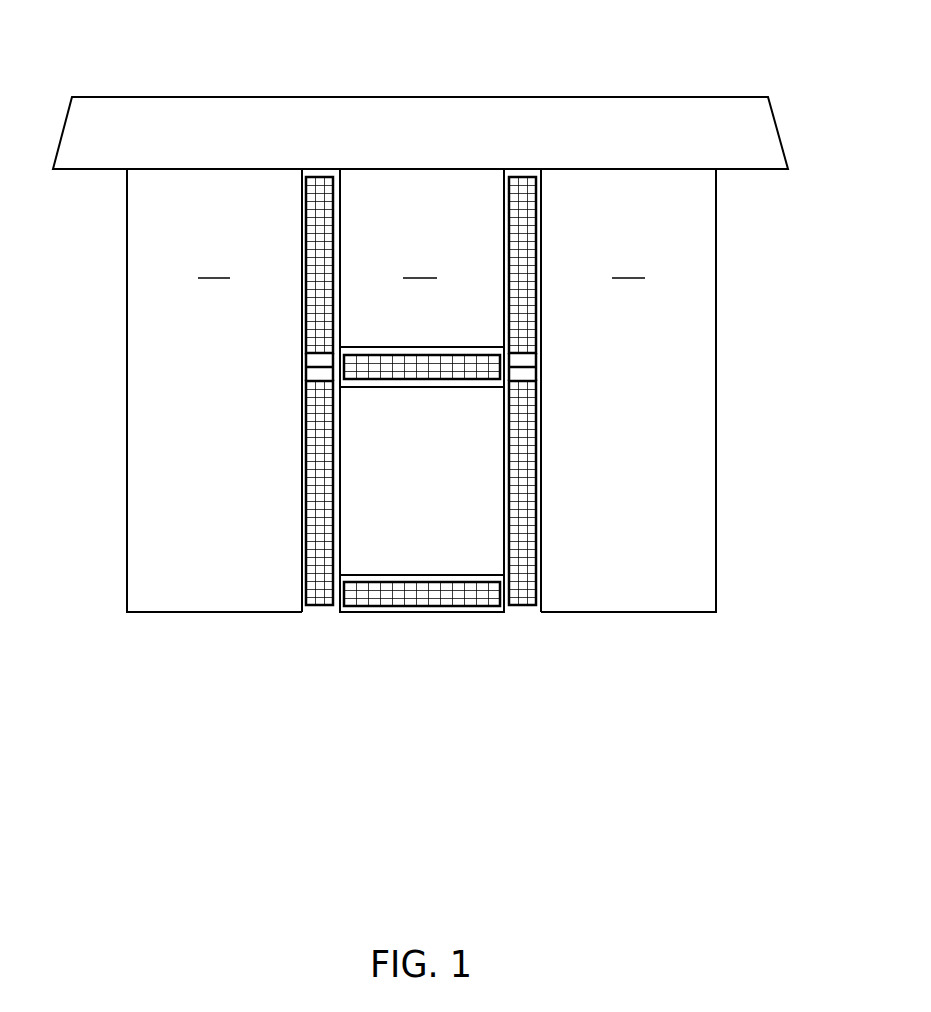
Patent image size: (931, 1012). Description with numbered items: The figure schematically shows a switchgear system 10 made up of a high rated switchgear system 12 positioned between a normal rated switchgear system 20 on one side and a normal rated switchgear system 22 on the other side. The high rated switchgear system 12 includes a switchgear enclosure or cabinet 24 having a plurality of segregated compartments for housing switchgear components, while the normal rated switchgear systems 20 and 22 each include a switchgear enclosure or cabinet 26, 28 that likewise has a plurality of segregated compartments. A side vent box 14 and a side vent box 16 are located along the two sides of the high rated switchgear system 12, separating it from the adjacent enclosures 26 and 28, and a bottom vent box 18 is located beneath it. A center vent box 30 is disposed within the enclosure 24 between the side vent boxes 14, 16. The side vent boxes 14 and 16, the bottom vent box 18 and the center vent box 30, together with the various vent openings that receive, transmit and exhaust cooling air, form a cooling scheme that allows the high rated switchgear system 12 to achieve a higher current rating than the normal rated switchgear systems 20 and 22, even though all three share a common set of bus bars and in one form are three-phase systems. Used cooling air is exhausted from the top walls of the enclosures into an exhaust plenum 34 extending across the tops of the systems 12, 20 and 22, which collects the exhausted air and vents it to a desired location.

The switchgear system 10 is at (749, 45).
The high rated switchgear system 12 is at (422, 373).
The side vent box 14 is at (323, 613).
The side vent box 16 is at (533, 613).
The bottom vent box 18 is at (428, 613).
The normal rated switchgear system 20 is at (214, 373).
The normal rated switchgear system 22 is at (628, 373).
The switchgear enclosure or cabinet 24 is at (420, 265).
The switchgear enclosure or cabinet 26 is at (214, 265).
The switchgear enclosure or cabinet 28 is at (628, 265).
The center vent box 30 is at (426, 388).
The exhaust plenum 34 is at (380, 97).